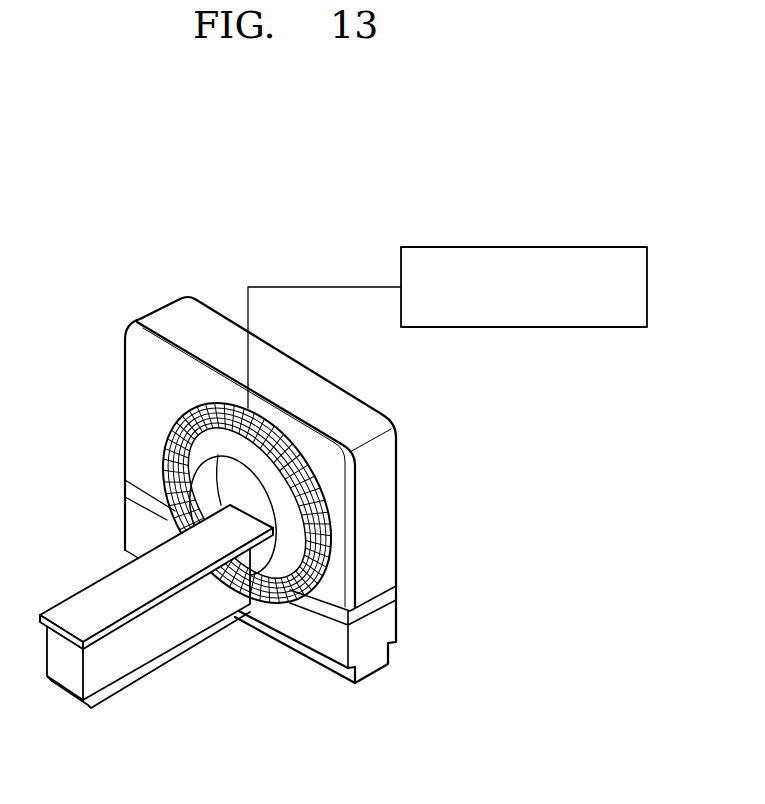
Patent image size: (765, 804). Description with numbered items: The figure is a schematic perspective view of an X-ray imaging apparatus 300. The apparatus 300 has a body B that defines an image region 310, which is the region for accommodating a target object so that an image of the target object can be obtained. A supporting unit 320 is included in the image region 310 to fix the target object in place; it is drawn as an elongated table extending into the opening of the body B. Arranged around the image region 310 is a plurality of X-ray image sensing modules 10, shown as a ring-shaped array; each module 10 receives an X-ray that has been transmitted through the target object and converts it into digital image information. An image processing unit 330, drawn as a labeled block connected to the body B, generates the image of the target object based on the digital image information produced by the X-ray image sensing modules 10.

The X-ray imaging apparatus 300 is at (425, 170).
The image region 310 is at (190, 491).
The supporting unit 320 is at (73, 607).
The image processing unit 330 is at (525, 247).
The X-ray image sensing module 10 is at (178, 457).
The body B is at (383, 517).